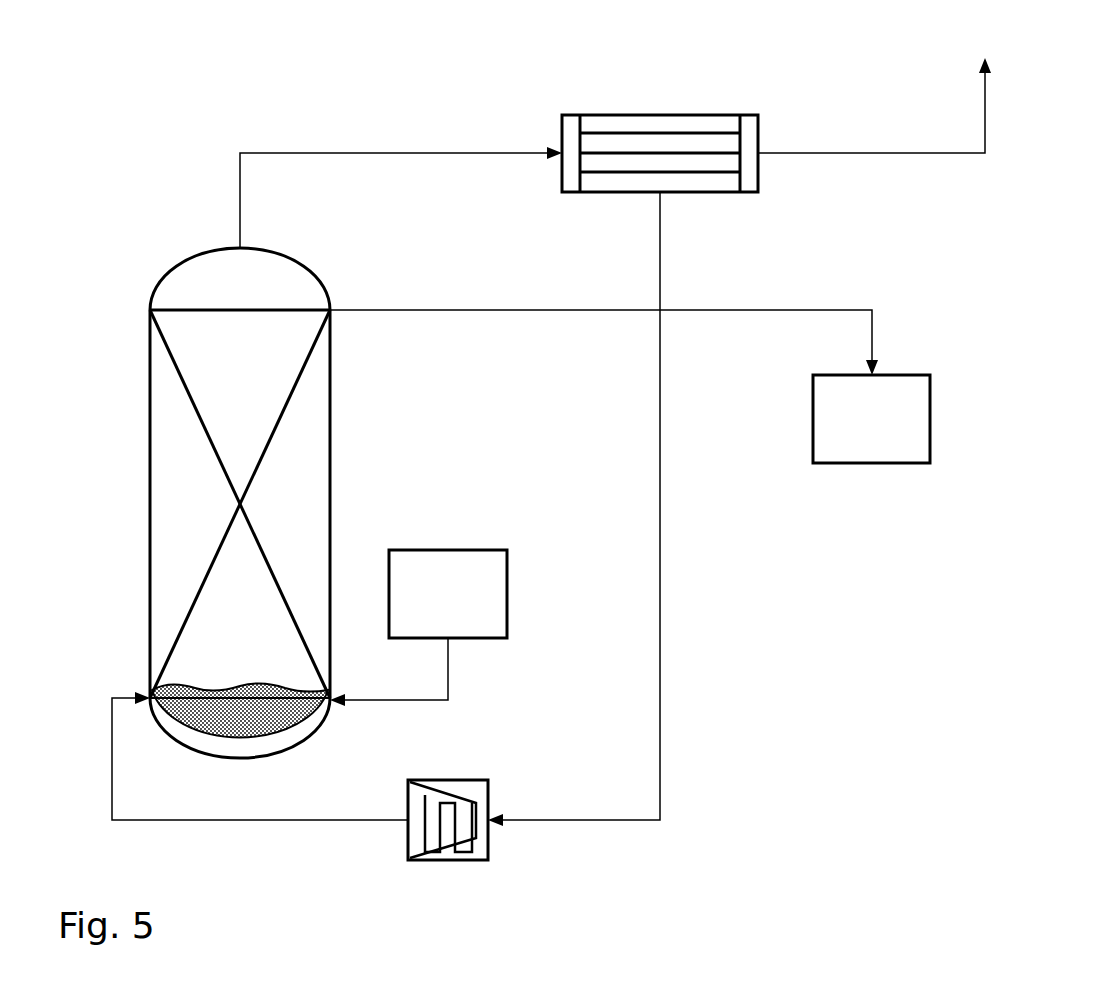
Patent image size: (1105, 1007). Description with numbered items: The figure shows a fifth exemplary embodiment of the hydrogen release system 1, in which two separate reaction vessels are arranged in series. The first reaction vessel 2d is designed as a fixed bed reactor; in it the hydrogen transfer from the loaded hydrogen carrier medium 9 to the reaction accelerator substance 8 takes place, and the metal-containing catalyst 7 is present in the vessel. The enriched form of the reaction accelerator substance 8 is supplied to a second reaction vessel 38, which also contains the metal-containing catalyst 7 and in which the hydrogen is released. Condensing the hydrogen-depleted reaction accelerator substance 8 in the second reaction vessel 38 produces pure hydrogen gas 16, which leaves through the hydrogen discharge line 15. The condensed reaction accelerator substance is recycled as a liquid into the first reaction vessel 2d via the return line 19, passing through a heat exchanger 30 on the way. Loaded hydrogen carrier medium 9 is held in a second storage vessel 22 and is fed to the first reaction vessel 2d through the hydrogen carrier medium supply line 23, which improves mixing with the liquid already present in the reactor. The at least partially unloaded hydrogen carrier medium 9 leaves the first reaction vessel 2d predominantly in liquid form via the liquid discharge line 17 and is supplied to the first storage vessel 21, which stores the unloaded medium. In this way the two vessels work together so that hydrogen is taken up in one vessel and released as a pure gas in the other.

The apparatus 1 is at (1003, 289).
The reaction vessel 2d is at (148, 543).
The metal-containing catalyst 7 is at (150, 715).
The reaction accelerator substance 8 is at (256, 657).
The hydrogen carrier medium 9 is at (438, 610).
The hydrogen discharge line 15 is at (833, 153).
The gaseous hydrogen 16 is at (985, 49).
The liquid discharge line 17 is at (483, 310).
The return line 19 is at (250, 822).
The first storage vessel 21 is at (920, 418).
The second storage vessel 22 is at (492, 625).
The hydrogen carrier medium supply line 23 is at (370, 702).
The heat exchanger 30 is at (440, 862).
The second reaction vessel 38 is at (645, 120).